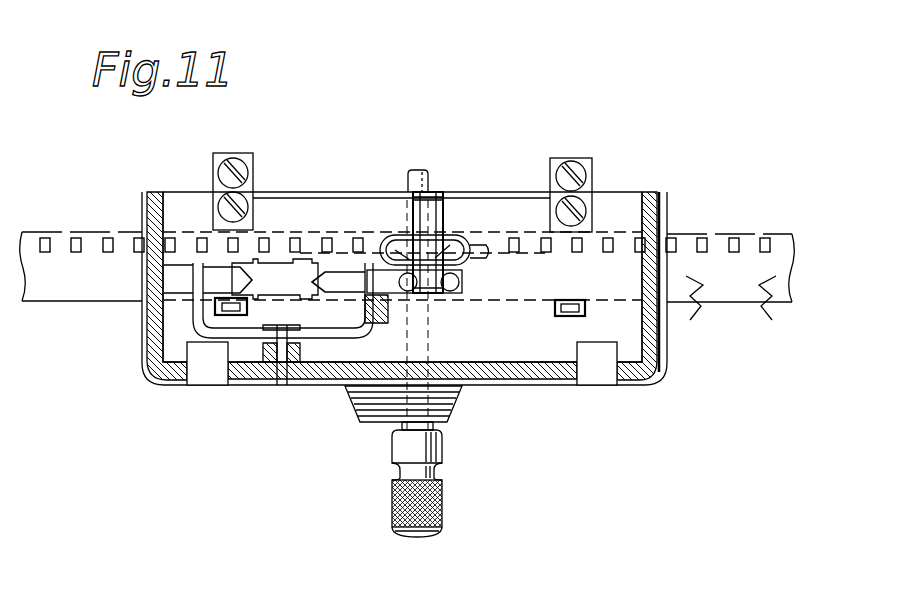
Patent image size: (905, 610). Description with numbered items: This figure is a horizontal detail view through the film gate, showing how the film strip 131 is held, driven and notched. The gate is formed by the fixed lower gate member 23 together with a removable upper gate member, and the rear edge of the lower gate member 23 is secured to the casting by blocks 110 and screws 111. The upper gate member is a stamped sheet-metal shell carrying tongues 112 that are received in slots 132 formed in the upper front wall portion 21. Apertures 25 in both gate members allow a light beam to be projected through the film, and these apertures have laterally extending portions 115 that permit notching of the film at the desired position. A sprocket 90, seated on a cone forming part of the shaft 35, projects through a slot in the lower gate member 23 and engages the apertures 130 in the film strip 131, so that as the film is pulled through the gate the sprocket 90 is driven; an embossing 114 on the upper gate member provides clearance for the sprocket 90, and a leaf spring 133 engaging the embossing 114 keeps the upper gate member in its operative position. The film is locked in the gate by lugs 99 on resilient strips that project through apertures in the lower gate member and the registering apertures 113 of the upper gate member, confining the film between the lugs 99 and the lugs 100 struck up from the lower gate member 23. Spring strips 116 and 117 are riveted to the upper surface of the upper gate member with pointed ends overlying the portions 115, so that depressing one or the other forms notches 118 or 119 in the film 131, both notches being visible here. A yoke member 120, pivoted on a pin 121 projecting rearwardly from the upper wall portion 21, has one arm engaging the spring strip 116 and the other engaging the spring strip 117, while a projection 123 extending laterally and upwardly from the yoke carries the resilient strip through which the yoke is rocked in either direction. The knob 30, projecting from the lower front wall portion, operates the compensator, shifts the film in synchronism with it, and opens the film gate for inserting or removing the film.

The upper front wall portion 21 is at (312, 382).
The lower gate member 23 is at (482, 326).
The apertures 25 is at (300, 262).
The knob 30 is at (410, 536).
The shaft 35 is at (428, 180).
The sprocket 90 is at (480, 250).
The lugs 99 is at (228, 308).
The lugs 100 is at (251, 213).
The blocks 110 is at (254, 170).
The screws 111 is at (214, 203).
The tongues 112 is at (207, 368).
The apertures 113 is at (248, 308).
The embossing 114 is at (468, 267).
The laterally extending portions 115 is at (336, 262).
The spring strip 116 is at (227, 280).
The spring strip 117 is at (338, 282).
The notch 118 is at (694, 318).
The notch 119 is at (766, 318).
The yoke member 120 is at (310, 332).
The pin 121 is at (340, 400).
The projection 123 is at (381, 325).
The apertures 130 is at (766, 236).
The film strip 131 is at (90, 212).
The slots 132 is at (178, 378).
The leaf spring 133 is at (444, 216).